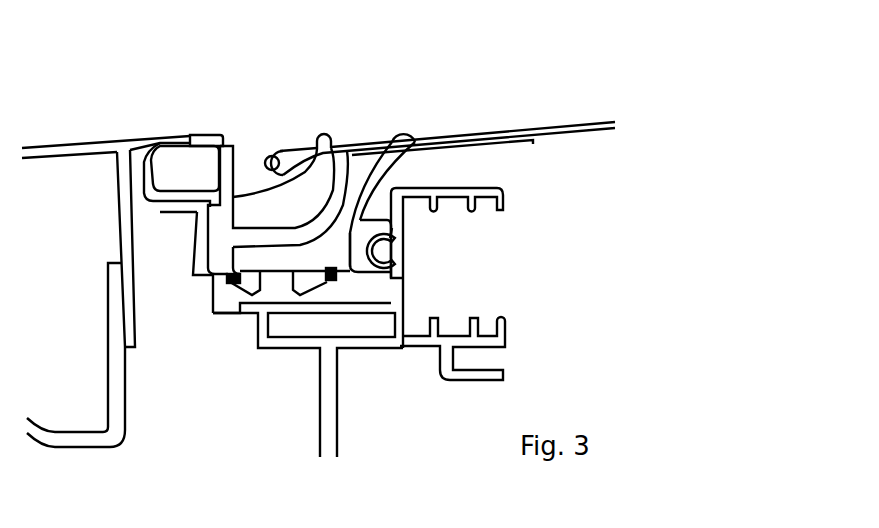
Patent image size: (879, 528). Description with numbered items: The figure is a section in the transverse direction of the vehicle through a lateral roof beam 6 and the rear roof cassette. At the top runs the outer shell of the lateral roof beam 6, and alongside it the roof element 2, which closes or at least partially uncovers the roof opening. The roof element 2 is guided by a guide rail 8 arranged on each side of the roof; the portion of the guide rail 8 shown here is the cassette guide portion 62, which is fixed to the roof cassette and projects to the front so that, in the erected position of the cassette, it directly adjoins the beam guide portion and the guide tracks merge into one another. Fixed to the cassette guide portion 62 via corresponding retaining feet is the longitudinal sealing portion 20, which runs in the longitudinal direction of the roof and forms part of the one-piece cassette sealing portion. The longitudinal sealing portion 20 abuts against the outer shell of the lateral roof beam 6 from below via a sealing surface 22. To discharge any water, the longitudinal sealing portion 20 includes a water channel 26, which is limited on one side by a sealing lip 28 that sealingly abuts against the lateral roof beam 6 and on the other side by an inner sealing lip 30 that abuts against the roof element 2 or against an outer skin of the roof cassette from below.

The roof element 2 is at (480, 136).
The lateral roof beam 6 is at (63, 144).
The guide rail 8 is at (405, 225).
The longitudinal sealing portion 20 is at (196, 232).
The sealing surface 22 is at (172, 145).
The water channel 26 is at (250, 190).
The sealing lip 28 is at (218, 134).
The inner sealing lip 30 is at (295, 150).
The cassette guide portion 62 is at (405, 277).